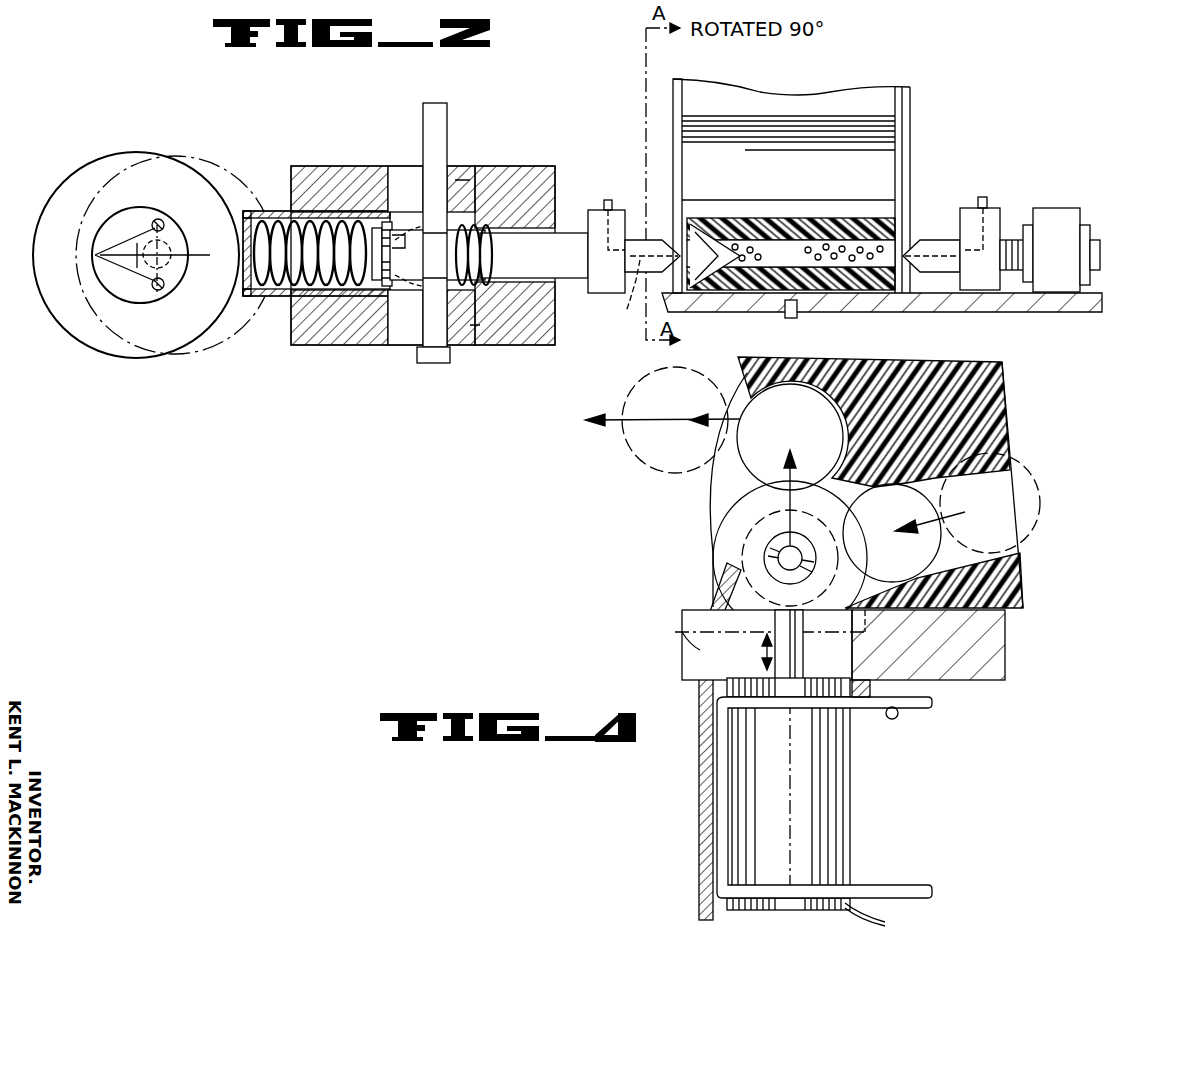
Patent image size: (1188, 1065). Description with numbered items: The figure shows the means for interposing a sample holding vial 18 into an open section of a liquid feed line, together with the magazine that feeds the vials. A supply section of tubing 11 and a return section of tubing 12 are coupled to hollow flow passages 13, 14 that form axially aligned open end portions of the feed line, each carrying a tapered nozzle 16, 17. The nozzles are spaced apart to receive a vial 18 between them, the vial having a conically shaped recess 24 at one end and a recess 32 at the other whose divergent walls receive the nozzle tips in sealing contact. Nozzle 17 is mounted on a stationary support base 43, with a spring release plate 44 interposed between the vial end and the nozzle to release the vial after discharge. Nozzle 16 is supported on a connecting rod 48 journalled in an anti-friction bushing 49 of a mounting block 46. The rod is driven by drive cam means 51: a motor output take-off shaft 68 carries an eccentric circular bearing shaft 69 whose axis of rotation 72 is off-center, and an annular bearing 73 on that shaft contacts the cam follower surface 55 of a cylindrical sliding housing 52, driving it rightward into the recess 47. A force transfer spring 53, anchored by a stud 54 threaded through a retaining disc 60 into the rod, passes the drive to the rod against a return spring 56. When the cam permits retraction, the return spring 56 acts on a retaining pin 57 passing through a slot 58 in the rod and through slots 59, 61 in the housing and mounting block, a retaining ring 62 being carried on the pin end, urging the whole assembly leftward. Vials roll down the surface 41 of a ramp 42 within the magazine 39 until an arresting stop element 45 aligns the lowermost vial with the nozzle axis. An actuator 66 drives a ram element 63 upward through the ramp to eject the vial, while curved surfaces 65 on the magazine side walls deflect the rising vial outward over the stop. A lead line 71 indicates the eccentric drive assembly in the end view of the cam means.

In FIG. 2, the supply section of tubing 11 is at (606, 208).
In FIG. 2, the return section of tubing 12 is at (993, 203).
In FIG. 2, the flow passage 13 is at (628, 313).
In FIG. 2, the flow passage 14 is at (993, 205).
In FIG. 2, the tapered nozzle 16 is at (637, 240).
In FIG. 2, the tapered nozzle 17 is at (982, 227).
In FIG. 2, the sample holding vial 18 is at (773, 217).
In FIG. 4, the sample holding vial 18 is at (643, 468).
In FIG. 2, the conically shaped recess 24 is at (880, 220).
In FIG. 2, the recess 32 is at (700, 240).
In FIG. 4, the magazine 39 is at (1008, 425).
In FIG. 4, the ramp surface 41 is at (970, 560).
In FIG. 4, the ramp 42 is at (945, 495).
In FIG. 2, the stationary support base 43 is at (1065, 312).
In FIG. 4, the stationary support base 43 is at (1005, 655).
In FIG. 2, the spring release plate 44 is at (937, 233).
In FIG. 4, the arresting stop element 45 is at (715, 597).
In FIG. 2, the mounting block 46 is at (305, 340).
In FIG. 2, the recess 47 is at (500, 193).
In FIG. 2, the connecting rod 48 is at (570, 232).
In FIG. 2, the anti-friction bushing 49 is at (540, 240).
In FIG. 2, the drive cam means 51 is at (155, 150).
In FIG. 2, the cylindrical sliding housing 52 is at (250, 210).
In FIG. 2, the force transfer spring 53 is at (320, 223).
In FIG. 2, the stud 54 is at (362, 240).
In FIG. 2, the cam follower surface 55 is at (243, 222).
In FIG. 2, the return spring 56 is at (517, 197).
In FIG. 2, the retaining pin 57 is at (437, 103).
In FIG. 2, the slot 58 is at (408, 233).
In FIG. 2, the slot 59 is at (400, 290).
In FIG. 2, the retaining disc 60 is at (365, 325).
In FIG. 2, the slot 61 is at (457, 177).
In FIG. 2, the retaining ring 62 is at (425, 362).
In FIG. 2, the ram element 63 is at (790, 318).
In FIG. 4, the ram element 63 is at (833, 657).
In FIG. 4, the curved surface 65 is at (735, 373).
In FIG. 4, the actuator 66 is at (790, 782).
In FIG. 2, the output drive take-off shaft 68 is at (175, 296).
In FIG. 2, the circular bearing shaft 69 is at (117, 222).
In FIG. 2, the pointer 71 is at (95, 255).
In FIG. 2, the shaft axis of rotation 72 is at (172, 256).
In FIG. 2, the annular bearing 73 is at (90, 335).